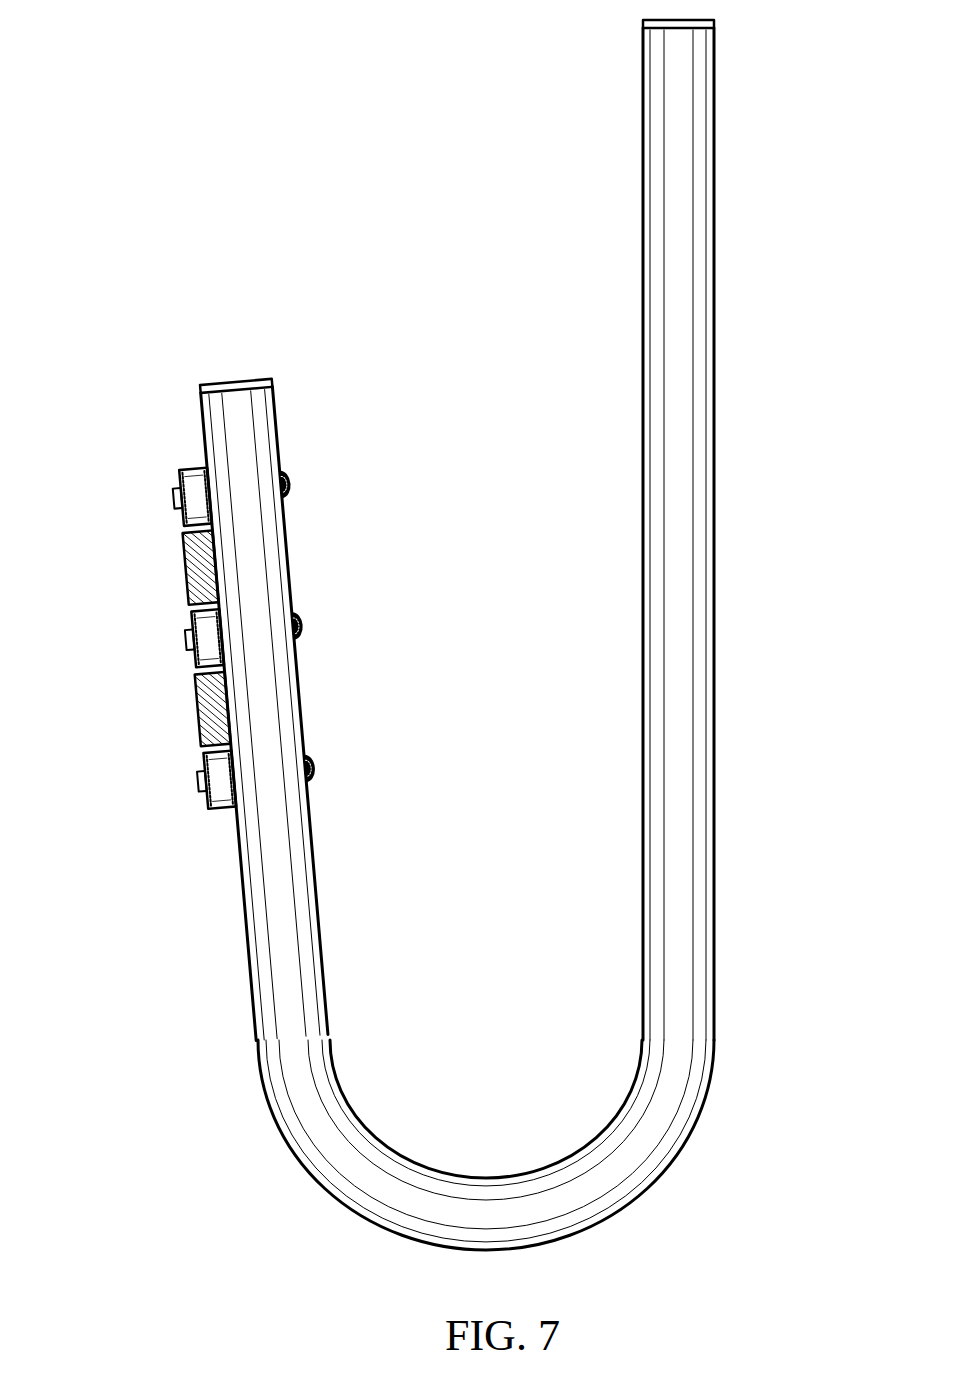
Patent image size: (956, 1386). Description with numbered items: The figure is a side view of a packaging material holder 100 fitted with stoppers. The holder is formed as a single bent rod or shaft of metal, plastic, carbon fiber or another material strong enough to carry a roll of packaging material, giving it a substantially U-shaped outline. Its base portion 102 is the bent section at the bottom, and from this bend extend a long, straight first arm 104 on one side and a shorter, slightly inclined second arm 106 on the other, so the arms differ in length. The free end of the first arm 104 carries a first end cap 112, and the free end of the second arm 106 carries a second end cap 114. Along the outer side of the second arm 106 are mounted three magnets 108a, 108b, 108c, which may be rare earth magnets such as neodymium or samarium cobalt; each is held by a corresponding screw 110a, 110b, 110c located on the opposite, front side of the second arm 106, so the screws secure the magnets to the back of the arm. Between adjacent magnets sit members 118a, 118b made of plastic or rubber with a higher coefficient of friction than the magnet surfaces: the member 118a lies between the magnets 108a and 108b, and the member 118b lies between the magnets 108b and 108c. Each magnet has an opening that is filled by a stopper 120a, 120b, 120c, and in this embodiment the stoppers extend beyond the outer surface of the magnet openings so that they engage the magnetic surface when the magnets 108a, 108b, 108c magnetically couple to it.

The packaging material holder 100 is at (176, 125).
The base portion 102 is at (306, 1174).
The first arm 104 is at (714, 430).
The second arm 106 is at (250, 1000).
The magnet 108a is at (181, 470).
The magnet 108b is at (192, 610).
The magnet 108c is at (205, 750).
The screw 110a is at (290, 486).
The screw 110b is at (302, 626).
The screw 110c is at (312, 768).
The first end cap 112 is at (714, 26).
The second end cap 114 is at (200, 393).
The member 118a is at (185, 551).
The member 118b is at (198, 686).
The stopper 120a is at (172, 497).
The stopper 120b is at (185, 638).
The stopper 120c is at (198, 778).